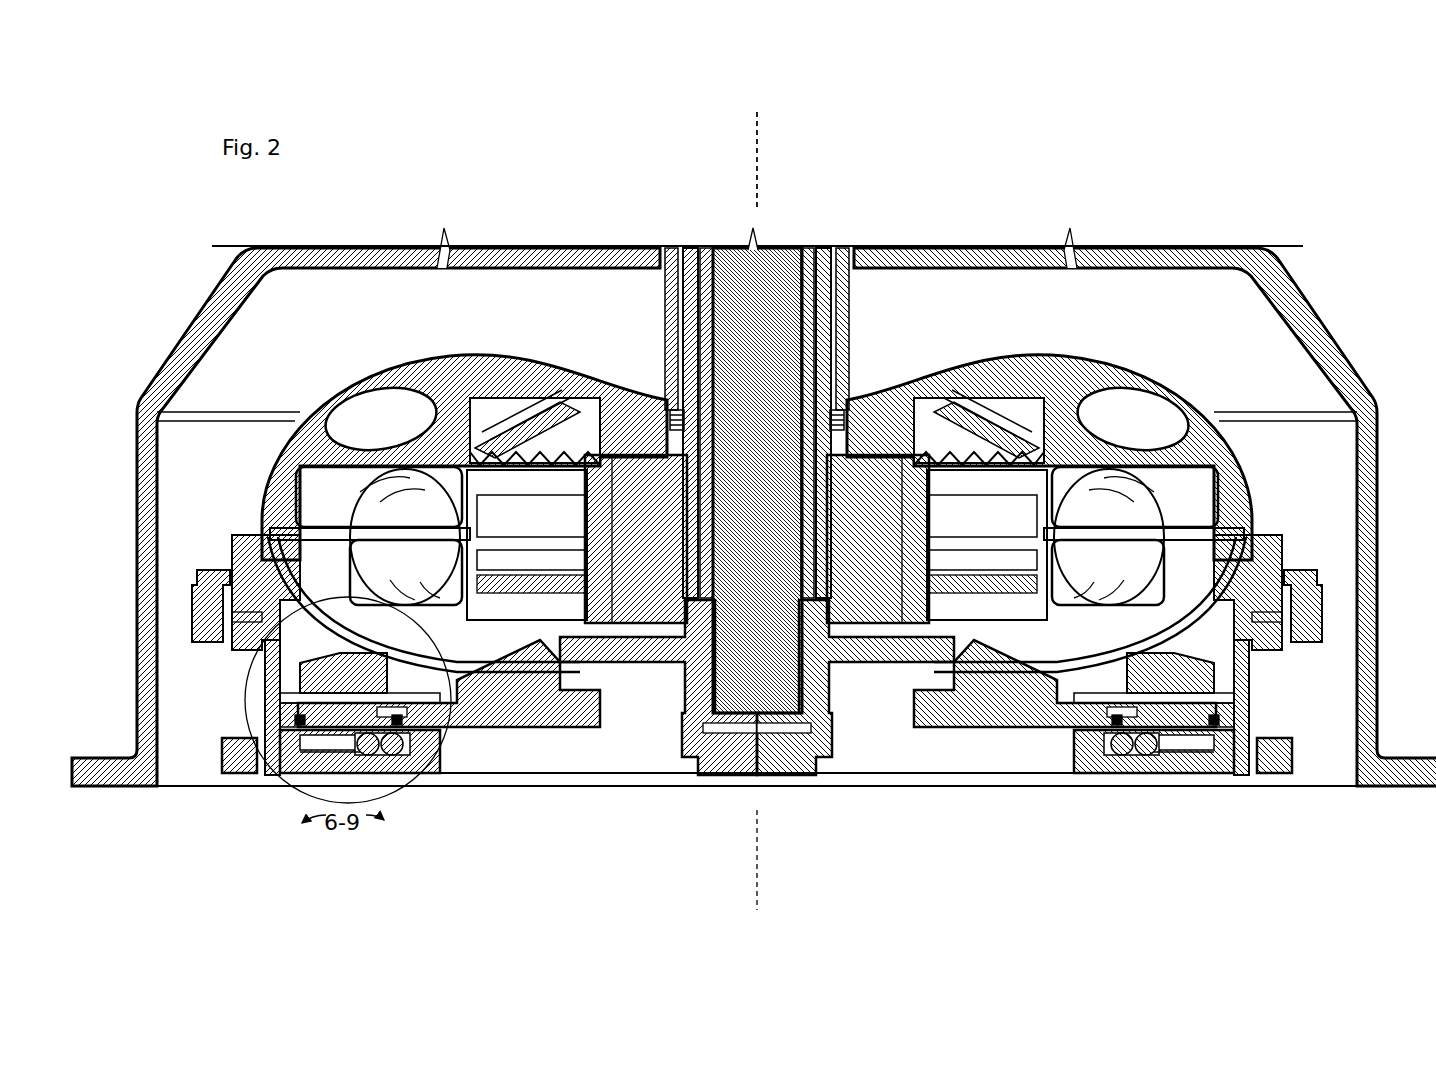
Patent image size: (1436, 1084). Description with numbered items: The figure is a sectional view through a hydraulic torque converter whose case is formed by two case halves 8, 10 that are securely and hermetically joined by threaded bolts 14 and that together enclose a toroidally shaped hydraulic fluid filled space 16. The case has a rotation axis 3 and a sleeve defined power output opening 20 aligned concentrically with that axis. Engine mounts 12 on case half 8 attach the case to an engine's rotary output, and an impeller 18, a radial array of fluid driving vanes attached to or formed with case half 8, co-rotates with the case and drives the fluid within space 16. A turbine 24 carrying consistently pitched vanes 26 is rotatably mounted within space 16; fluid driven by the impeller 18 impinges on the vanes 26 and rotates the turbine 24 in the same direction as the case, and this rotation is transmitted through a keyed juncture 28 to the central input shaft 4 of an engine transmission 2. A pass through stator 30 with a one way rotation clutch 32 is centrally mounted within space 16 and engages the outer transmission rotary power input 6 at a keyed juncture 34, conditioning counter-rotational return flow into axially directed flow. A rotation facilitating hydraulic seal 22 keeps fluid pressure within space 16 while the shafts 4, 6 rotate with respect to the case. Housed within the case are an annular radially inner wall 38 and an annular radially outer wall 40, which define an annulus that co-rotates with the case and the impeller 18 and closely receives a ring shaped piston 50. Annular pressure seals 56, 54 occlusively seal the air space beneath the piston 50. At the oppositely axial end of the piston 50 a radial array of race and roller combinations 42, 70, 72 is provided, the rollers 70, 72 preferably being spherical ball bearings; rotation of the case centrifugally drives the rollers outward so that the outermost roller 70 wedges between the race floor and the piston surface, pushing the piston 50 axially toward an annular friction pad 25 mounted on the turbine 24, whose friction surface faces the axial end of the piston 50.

The engine transmission 2 is at (178, 335).
The rotation axis 3 is at (760, 157).
The central input shaft 4 is at (735, 260).
The outer transmission rotary power input 6 is at (692, 263).
The case half 8 is at (1225, 665).
The case half 10 is at (300, 450).
The engine mounts 12 is at (240, 775).
The threaded bolts 14 is at (205, 572).
The hydraulic fluid filled space 16 is at (262, 530).
The impeller 18 is at (455, 450).
The power output opening 20 is at (655, 290).
The hydraulic seal 22 is at (640, 505).
The turbine 24 is at (590, 625).
The friction pad 25 is at (337, 700).
The vanes 26 is at (530, 645).
The keyed juncture 28 is at (690, 665).
The stator 30 is at (520, 540).
The one way rotation clutch 32 is at (560, 455).
The keyed juncture 34 is at (600, 470).
The annular radially inner wall 38 is at (420, 758).
The annular radially outer wall 40 is at (262, 760).
The race 42 is at (350, 748).
The ring shaped piston 50 is at (290, 688).
The annular pressure seal 54 is at (300, 720).
The annular pressure seal 56 is at (407, 745).
The roller 70 is at (368, 745).
The roller 72 is at (400, 742).